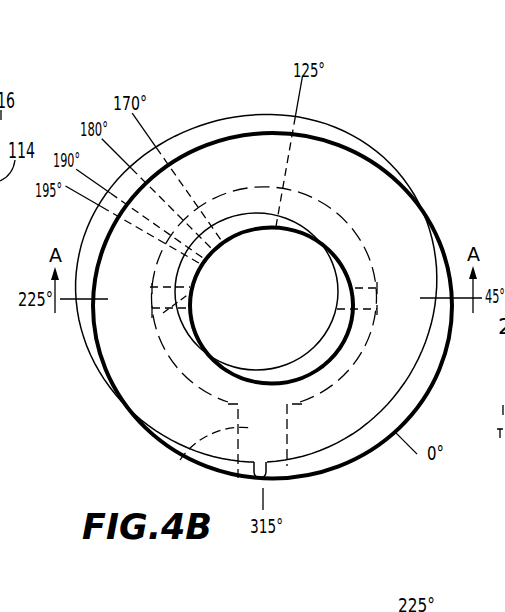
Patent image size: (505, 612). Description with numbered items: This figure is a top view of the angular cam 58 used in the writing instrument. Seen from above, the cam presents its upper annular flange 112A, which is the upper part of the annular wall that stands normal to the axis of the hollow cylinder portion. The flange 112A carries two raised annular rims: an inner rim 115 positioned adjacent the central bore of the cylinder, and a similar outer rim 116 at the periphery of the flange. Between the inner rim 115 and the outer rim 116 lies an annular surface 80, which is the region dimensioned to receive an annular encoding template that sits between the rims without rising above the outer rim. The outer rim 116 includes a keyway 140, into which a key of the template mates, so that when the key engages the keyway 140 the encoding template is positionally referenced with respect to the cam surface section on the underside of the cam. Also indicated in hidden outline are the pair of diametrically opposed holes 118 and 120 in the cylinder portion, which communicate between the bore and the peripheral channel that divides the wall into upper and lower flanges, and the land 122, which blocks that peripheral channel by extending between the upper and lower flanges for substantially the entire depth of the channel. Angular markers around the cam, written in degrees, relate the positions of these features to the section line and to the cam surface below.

The angular cam 58 is at (396, 227).
The annular surface 80 is at (405, 265).
The outer rim 116 is at (236, 286).
The upper annular flange 112A is at (108, 391).
The inner rim 115 is at (317, 236).
The hole 118 is at (192, 290).
The hole 120 is at (336, 290).
The land 122 is at (180, 460).
The keyway 140 is at (267, 465).